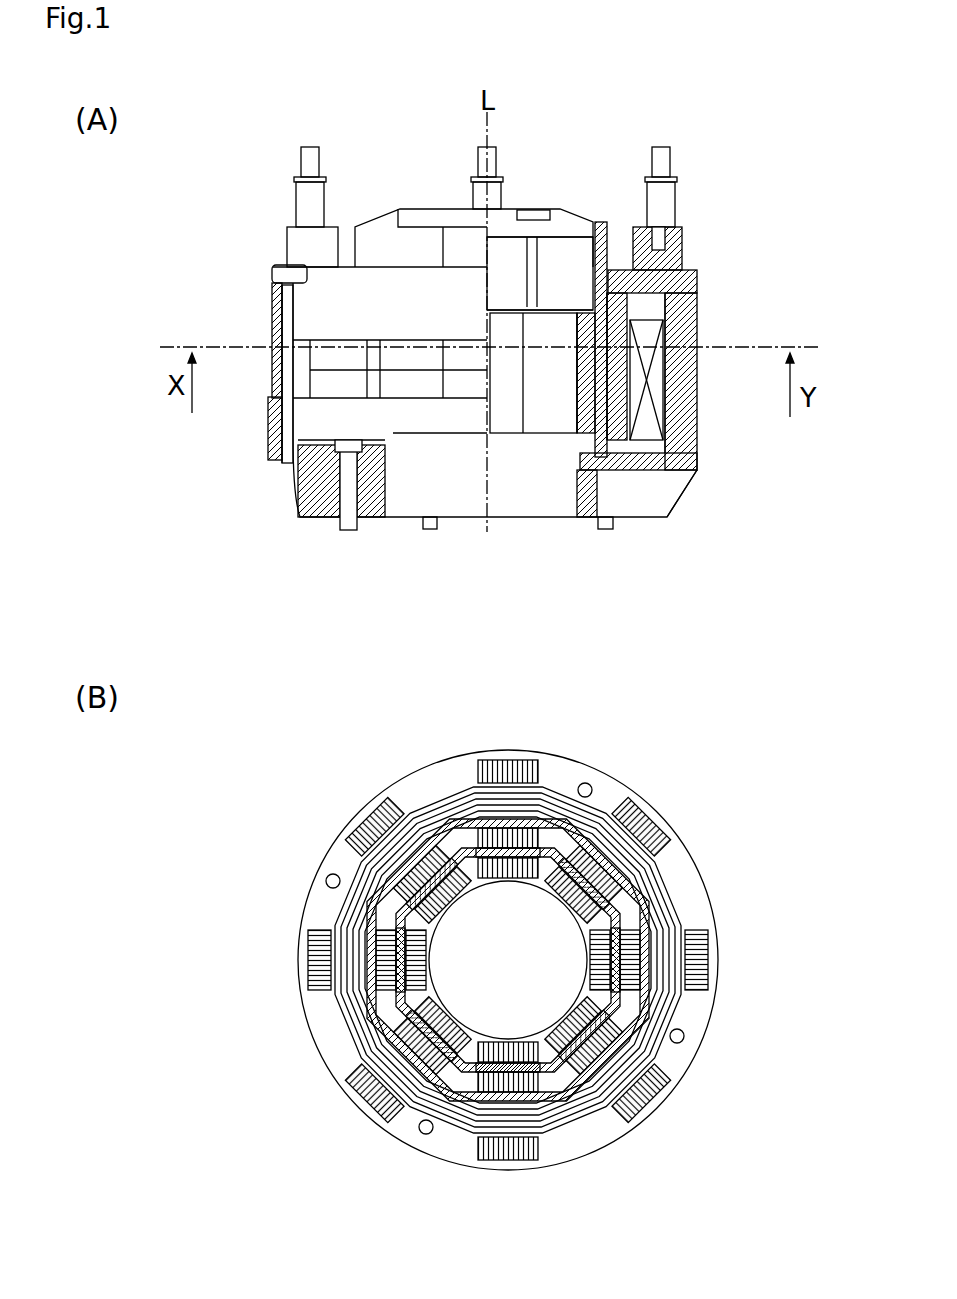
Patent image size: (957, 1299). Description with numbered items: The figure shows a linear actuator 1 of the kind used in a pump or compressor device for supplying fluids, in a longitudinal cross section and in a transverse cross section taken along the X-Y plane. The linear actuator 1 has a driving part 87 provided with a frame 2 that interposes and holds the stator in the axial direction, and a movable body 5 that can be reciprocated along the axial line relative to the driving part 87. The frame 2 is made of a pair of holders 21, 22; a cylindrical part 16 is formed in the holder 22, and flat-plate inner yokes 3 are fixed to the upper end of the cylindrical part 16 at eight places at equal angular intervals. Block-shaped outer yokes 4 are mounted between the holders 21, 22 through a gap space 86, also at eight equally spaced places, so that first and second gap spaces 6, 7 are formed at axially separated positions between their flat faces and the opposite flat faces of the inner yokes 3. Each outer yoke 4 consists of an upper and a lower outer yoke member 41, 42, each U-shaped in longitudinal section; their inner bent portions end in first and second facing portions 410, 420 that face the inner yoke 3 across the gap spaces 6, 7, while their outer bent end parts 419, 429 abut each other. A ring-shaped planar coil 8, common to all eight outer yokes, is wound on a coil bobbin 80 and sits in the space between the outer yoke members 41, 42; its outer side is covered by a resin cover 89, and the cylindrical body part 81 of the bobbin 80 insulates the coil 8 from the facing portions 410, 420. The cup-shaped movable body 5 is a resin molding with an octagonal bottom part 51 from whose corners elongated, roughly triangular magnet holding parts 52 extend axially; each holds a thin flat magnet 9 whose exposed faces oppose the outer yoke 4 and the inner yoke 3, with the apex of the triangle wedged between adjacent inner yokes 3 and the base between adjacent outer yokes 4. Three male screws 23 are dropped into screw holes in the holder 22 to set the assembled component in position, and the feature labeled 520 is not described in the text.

The linear actuator 1 is at (727, 166).
The frame 2 is at (80, 315).
The holder 21 is at (270, 308).
The holder 22 is at (270, 422).
The male screws 23 is at (347, 520).
The inner yoke 3 is at (577, 430).
The outer yoke 4 is at (863, 327).
The outer yoke member 41 is at (697, 330).
The first facing portion 410 is at (690, 330).
The end part 419 is at (690, 363).
The end part 429 is at (690, 390).
The outer yoke member 42 is at (697, 432).
The second facing portion 420 is at (688, 473).
The movable body 5 is at (387, 206).
The bottom part 51 is at (450, 215).
The magnet holding part 52 is at (663, 1023).
The screw holes 520 is at (653, 1000).
The first gap space 6 is at (580, 330).
The second gap space 7 is at (588, 370).
The coil 8 is at (580, 397).
The coil bobbin 80 is at (655, 312).
The body part 81 is at (508, 960).
The gap space 86 is at (576, 835).
The driving part 87 is at (262, 436).
The cover 89 is at (690, 312).
The magnet 9 is at (577, 373).
The cylindrical part 16 is at (583, 437).